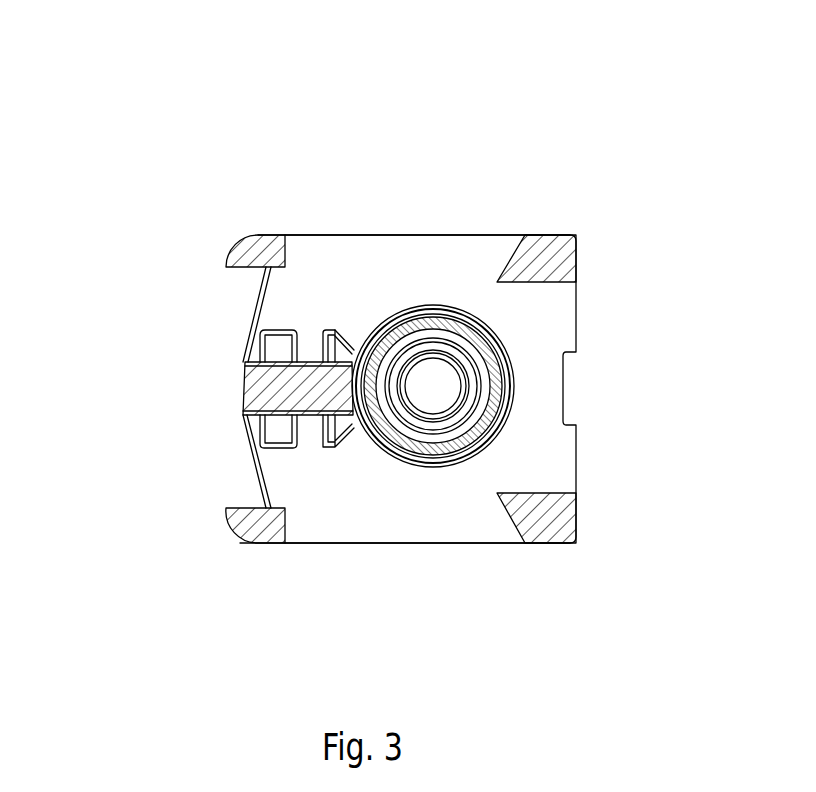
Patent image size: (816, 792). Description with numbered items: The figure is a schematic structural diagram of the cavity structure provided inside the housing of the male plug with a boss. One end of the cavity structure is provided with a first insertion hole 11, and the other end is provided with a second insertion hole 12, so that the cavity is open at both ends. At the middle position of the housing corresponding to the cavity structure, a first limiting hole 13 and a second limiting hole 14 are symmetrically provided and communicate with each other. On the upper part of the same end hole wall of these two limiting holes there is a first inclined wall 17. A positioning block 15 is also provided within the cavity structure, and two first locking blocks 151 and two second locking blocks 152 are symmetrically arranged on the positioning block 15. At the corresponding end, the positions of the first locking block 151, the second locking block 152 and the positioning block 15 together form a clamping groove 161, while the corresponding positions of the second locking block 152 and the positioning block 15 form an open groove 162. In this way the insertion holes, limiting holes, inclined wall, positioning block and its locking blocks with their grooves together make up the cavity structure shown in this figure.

The first insertion hole 11 is at (584, 312).
The second insertion hole 12 is at (224, 501).
The first limiting hole 13 is at (400, 202).
The second limiting hole 14 is at (377, 572).
The positioning block 15 is at (214, 406).
The first locking block 151 is at (326, 297).
The second locking block 152 is at (248, 310).
The clamping groove 161 is at (294, 310).
The open groove 162 is at (220, 338).
The first inclined wall 17 is at (493, 222).